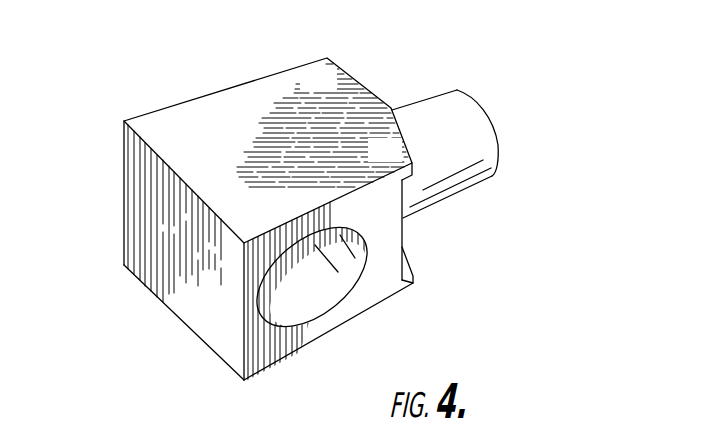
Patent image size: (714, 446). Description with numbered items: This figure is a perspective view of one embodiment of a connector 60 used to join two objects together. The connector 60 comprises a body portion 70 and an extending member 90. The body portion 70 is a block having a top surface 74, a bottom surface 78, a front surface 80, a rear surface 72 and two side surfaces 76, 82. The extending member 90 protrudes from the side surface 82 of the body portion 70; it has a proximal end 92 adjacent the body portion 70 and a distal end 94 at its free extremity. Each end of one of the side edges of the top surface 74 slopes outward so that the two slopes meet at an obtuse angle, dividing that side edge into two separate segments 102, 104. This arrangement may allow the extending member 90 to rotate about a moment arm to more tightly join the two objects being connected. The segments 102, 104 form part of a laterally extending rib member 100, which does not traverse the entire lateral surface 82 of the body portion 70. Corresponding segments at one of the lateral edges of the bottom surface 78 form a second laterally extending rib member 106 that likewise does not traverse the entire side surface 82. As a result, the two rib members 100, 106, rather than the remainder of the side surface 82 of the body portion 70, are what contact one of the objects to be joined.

The connector 60 is at (522, 64).
The body portion 70 is at (194, 67).
The rear surface 72 is at (105, 216).
The top surface 74 is at (268, 150).
The side surface 76 is at (184, 322).
The bottom surface 78 is at (309, 364).
The front surface 80 is at (320, 285).
The side surface 82 is at (453, 238).
The extending member 90 is at (486, 176).
The proximal end 92 is at (424, 114).
The distal end 94 is at (474, 133).
The rib member 100 is at (409, 186).
The segment 102 is at (328, 101).
The segment 104 is at (322, 161).
The second rib member 106 is at (416, 297).